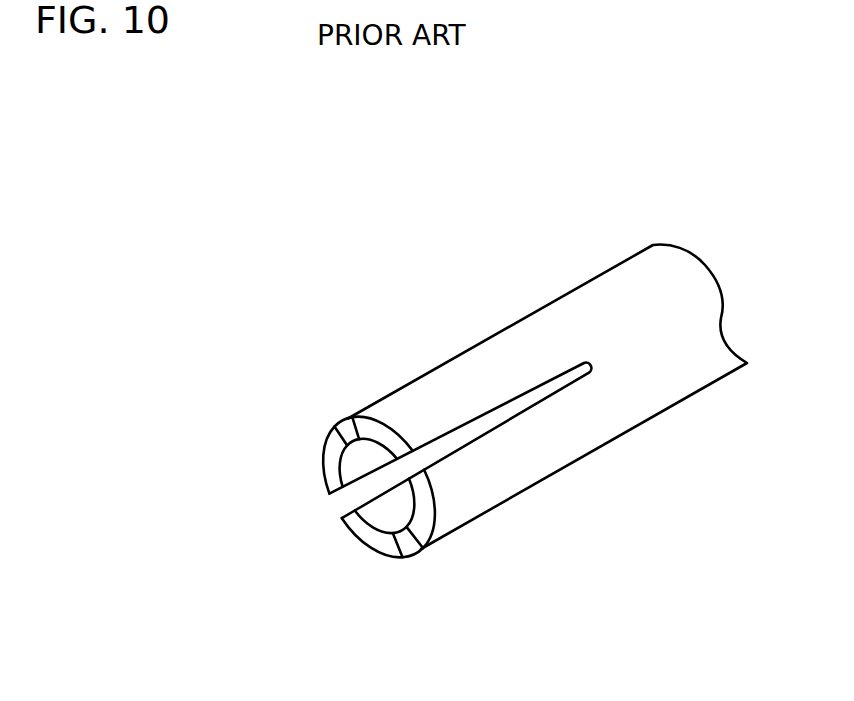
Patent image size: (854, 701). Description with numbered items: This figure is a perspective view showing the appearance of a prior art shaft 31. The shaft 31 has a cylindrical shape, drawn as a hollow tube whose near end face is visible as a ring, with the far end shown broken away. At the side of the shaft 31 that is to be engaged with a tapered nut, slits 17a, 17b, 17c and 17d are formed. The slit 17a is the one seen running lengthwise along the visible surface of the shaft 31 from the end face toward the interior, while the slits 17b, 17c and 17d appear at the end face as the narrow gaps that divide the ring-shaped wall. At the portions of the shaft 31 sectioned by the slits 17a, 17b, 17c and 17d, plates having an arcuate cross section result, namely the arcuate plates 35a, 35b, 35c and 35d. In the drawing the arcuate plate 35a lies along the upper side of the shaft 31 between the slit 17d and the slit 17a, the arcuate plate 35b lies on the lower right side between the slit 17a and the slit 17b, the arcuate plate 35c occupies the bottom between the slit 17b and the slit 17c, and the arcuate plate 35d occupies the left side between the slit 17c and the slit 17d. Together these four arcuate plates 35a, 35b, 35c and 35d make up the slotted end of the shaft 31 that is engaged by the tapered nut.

The shaft 31 is at (216, 232).
The slit 17a is at (475, 432).
The slit 17b is at (413, 557).
The slit 17c is at (337, 507).
The slit 17d is at (345, 408).
The arcuate plate 35a is at (415, 403).
The arcuate plate 35b is at (450, 503).
The arcuate plate 35c is at (365, 557).
The arcuate plate 35d is at (325, 468).